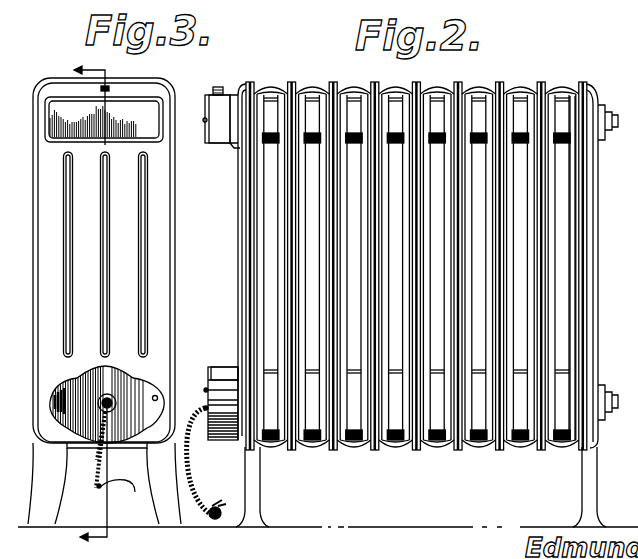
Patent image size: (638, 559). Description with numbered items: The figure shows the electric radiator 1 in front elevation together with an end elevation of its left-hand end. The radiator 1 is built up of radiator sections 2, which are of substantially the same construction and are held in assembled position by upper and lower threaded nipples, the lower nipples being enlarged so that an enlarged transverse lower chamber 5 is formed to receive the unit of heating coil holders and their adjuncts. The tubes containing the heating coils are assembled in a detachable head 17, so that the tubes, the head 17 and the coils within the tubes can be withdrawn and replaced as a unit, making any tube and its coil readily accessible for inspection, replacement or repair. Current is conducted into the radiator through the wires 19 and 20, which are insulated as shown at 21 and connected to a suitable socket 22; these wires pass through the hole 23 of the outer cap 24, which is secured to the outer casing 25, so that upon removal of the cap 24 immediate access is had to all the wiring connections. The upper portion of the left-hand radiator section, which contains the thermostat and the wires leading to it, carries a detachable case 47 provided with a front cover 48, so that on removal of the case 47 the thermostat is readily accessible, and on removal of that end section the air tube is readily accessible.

In FIG. 3, the electric radiator 1 is at (99, 301).
In FIG. 2, the electric radiator 1 is at (408, 304).
In FIG. 2, the radiator sections 2 is at (590, 224).
In FIG. 3, the enlarged transverse lower chamber 5 is at (76, 306).
In FIG. 3, the detachable head 17 is at (53, 287).
In FIG. 2, the detachable head 17 is at (243, 240).
In FIG. 3, the wire 19 is at (82, 462).
In FIG. 3, the wire 20 is at (122, 496).
In FIG. 3, the insulation 21 is at (95, 457).
In FIG. 2, the insulation 21 is at (212, 468).
In FIG. 2, the socket 22 is at (223, 523).
In FIG. 3, the hole 23 is at (84, 388).
In FIG. 3, the outer cap 24 is at (133, 393).
In FIG. 2, the outer cap 24 is at (214, 345).
In FIG. 2, the outer casing 25 is at (226, 366).
In FIG. 2, the detachable case 47 is at (224, 128).
In FIG. 3, the front cover 48 is at (104, 119).
In FIG. 2, the front cover 48 is at (208, 92).